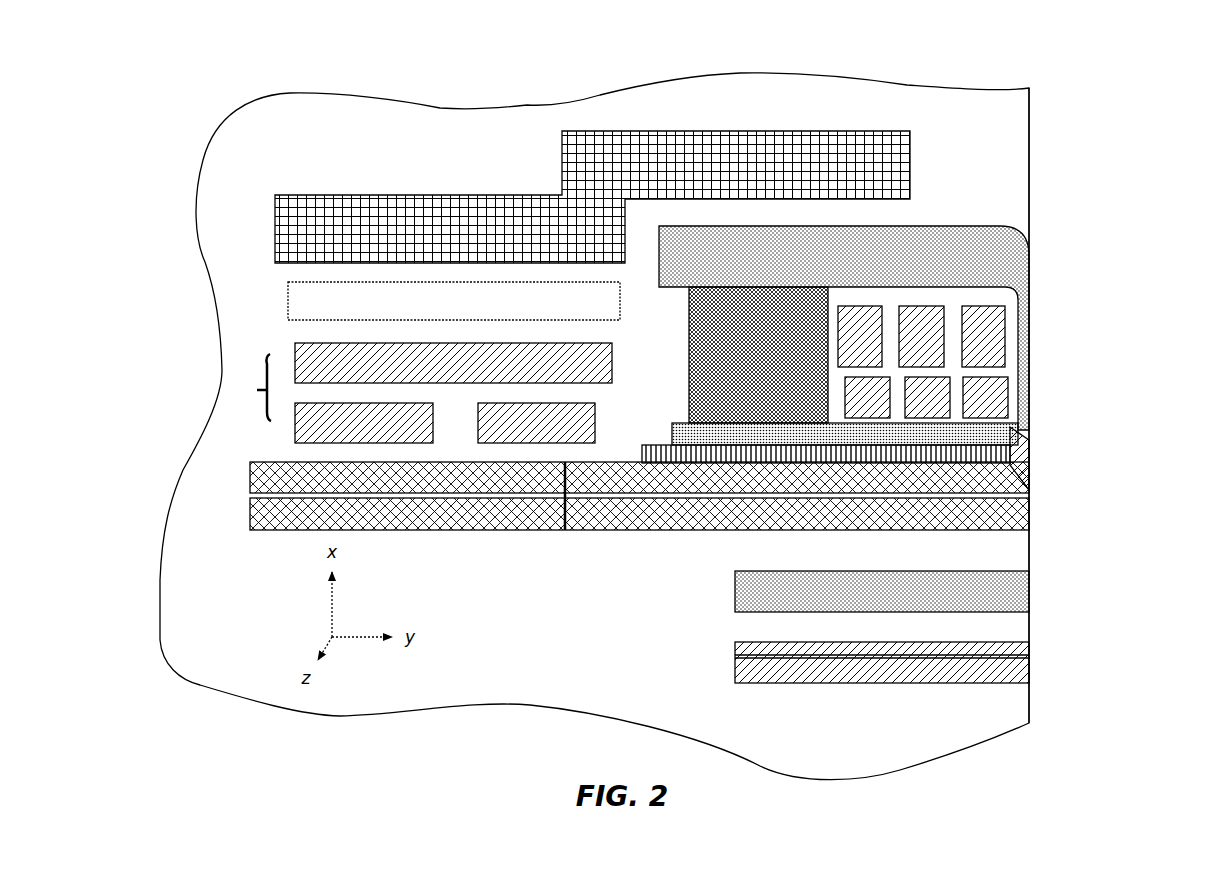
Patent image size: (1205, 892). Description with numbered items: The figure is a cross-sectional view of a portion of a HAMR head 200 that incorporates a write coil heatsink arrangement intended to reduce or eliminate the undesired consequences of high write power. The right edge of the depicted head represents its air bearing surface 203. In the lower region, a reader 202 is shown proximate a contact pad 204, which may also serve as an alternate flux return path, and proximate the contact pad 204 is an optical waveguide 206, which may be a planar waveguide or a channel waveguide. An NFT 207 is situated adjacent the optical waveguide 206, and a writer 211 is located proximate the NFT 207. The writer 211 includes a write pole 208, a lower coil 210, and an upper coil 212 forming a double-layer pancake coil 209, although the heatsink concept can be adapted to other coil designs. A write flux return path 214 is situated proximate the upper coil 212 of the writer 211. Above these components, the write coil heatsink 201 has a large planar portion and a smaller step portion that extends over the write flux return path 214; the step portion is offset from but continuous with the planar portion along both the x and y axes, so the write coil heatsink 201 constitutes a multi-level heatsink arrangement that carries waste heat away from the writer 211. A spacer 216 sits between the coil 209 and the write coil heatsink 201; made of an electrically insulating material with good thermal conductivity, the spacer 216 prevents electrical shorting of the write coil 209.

The HAMR head 200 is at (1078, 130).
The write coil heatsink 201 is at (911, 172).
The reader 202 is at (1025, 672).
The air bearing surface 203 is at (1031, 197).
The contact pad 204 is at (1015, 597).
The optical waveguide 206 is at (560, 496).
The NFT 207 is at (1031, 488).
The write pole 208 is at (1031, 453).
The double-layer pancake coil 209 is at (258, 390).
The lower coil 210 is at (596, 424).
The writer 211 is at (1076, 345).
The upper coil 212 is at (613, 364).
The write flux return path 214 is at (1003, 268).
The spacer 216 is at (454, 301).